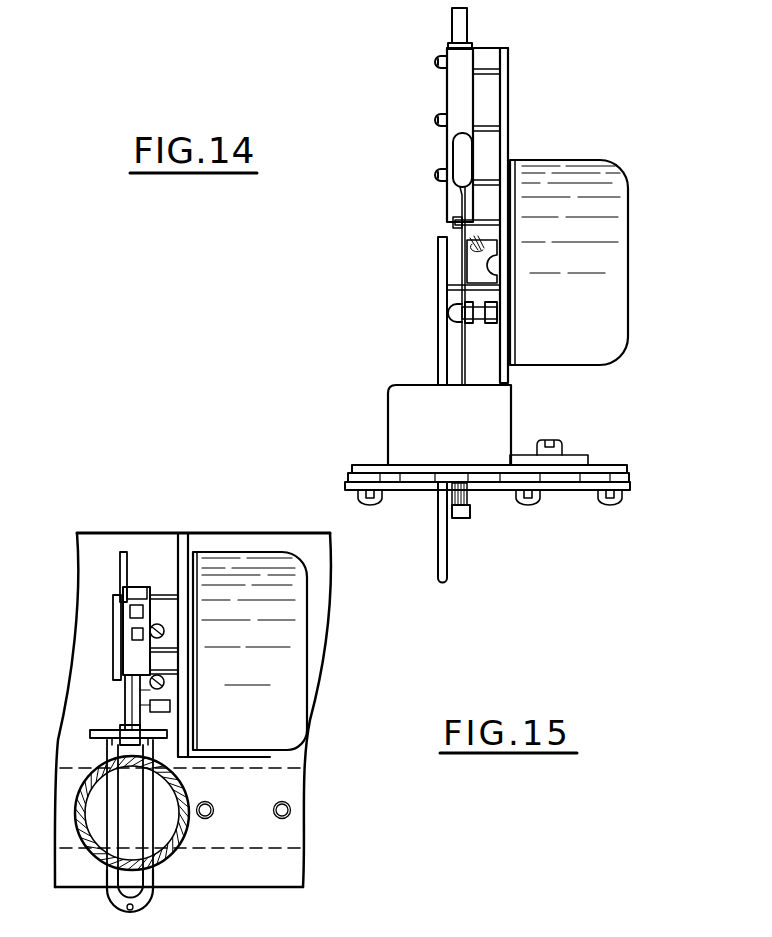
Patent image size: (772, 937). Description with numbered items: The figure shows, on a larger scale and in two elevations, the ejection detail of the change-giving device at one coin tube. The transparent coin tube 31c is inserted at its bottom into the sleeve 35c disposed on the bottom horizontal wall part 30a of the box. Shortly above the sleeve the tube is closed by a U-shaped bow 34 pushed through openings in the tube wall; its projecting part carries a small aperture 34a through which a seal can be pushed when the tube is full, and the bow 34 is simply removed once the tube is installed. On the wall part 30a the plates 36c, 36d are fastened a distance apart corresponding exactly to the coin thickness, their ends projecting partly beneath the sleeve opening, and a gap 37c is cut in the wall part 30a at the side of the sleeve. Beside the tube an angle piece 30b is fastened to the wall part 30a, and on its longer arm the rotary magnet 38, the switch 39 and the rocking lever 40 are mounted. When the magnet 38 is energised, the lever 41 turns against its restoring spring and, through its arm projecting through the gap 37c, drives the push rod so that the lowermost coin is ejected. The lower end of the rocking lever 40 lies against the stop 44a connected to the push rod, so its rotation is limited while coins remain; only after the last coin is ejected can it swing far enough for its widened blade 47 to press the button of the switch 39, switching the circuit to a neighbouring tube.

In FIG. 14, the bottom horizontal wall part 30a is at (613, 468).
In FIG. 14, the angle piece 30b is at (509, 98).
In FIG. 15, the angle piece 30b is at (184, 540).
In FIG. 15, the transparent coin tube 31c is at (90, 792).
In FIG. 15, the U-shaped bow 34 is at (150, 893).
In FIG. 15, the small aperture 34a is at (127, 909).
In FIG. 14, the sleeve 35c is at (402, 393).
In FIG. 15, the sleeve 35c is at (76, 823).
In FIG. 14, the plate 36c is at (399, 488).
In FIG. 14, the plate 36d is at (580, 488).
In FIG. 15, the gap 37c is at (120, 692).
In FIG. 14, the rotary magnet 38 is at (592, 164).
In FIG. 15, the rotary magnet 38 is at (256, 565).
In FIG. 15, the switch 39 is at (130, 612).
In FIG. 14, the rocking lever 40 is at (462, 272).
In FIG. 14, the lever 41 is at (440, 553).
In FIG. 15, the lever 41 is at (122, 560).
In FIG. 14, the stop 44a is at (466, 520).
In FIG. 14, the blade 47 is at (458, 155).
In FIG. 15, the blade 47 is at (115, 715).